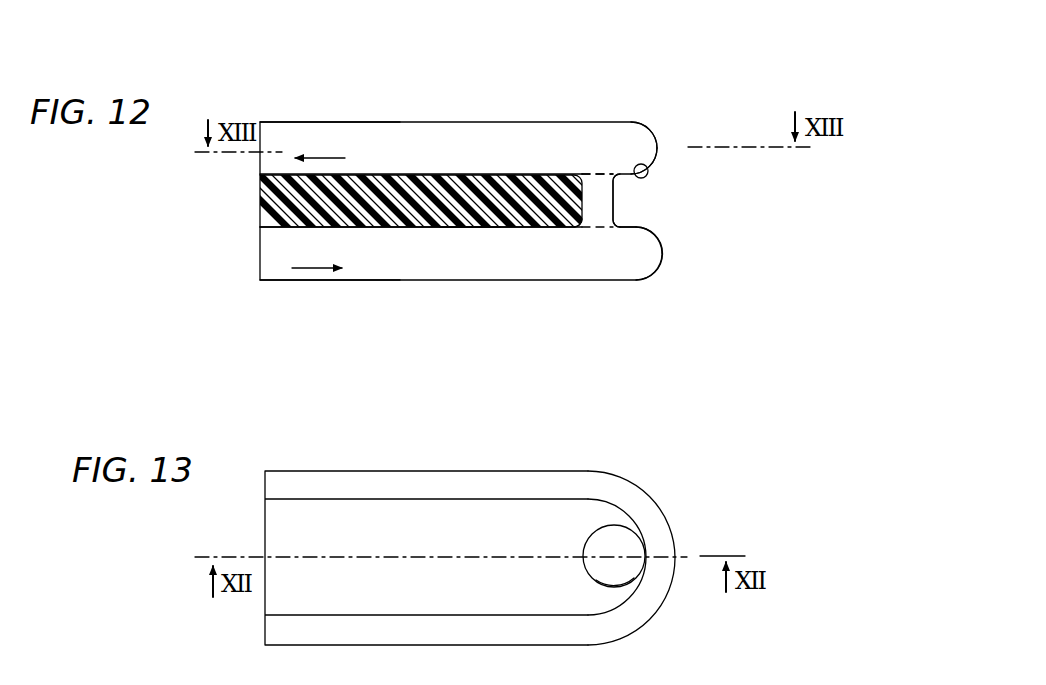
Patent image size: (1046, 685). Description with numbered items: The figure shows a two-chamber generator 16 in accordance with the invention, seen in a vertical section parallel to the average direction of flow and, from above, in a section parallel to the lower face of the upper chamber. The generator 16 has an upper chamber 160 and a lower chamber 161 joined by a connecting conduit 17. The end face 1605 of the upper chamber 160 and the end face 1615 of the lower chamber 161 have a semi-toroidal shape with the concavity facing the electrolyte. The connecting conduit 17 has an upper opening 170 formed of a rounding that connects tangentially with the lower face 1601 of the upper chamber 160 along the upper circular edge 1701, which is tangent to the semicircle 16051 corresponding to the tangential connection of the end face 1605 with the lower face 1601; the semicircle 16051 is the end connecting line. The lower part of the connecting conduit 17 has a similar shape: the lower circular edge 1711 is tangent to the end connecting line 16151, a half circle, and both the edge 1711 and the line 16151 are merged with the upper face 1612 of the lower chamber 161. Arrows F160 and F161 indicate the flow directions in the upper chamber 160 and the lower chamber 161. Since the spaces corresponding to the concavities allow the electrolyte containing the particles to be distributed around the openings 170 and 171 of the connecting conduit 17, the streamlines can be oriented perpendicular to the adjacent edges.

In FIG. 12, the generator 16 is at (464, 172).
In FIG. 12, the end face of the upper chamber 1605 is at (649, 128).
In FIG. 13, the end face of the upper chamber 1605 is at (612, 490).
In FIG. 12, the semicircle 16051 is at (640, 168).
In FIG. 13, the semicircle 16051 is at (632, 600).
In FIG. 12, the upper circular edge 1701 is at (648, 175).
In FIG. 13, the upper circular edge 1701 is at (596, 580).
In FIG. 12, the connecting conduit 17 is at (595, 200).
In FIG. 12, the end connecting line 16151 is at (640, 228).
In FIG. 12, the end face of the lower chamber 1615 is at (658, 248).
In FIG. 12, the lower face of the upper chamber 1601 is at (468, 175).
In FIG. 13, the lower face of the upper chamber 1601 is at (367, 517).
In FIG. 12, the upper opening 170 is at (593, 173).
In FIG. 13, the upper opening 170 is at (600, 548).
In FIG. 12, the upper chamber 160 is at (453, 156).
In FIG. 12, the lower chamber 161 is at (447, 266).
In FIG. 12, the upper face of the lower chamber 1612 is at (470, 230).
In FIG. 12, the lower opening 171 is at (580, 229).
In FIG. 12, the lower circular edge 1711 is at (635, 232).
In FIG. 12, the force on upper arm F160 is at (319, 144).
In FIG. 12, the force on lower arm F161 is at (319, 253).